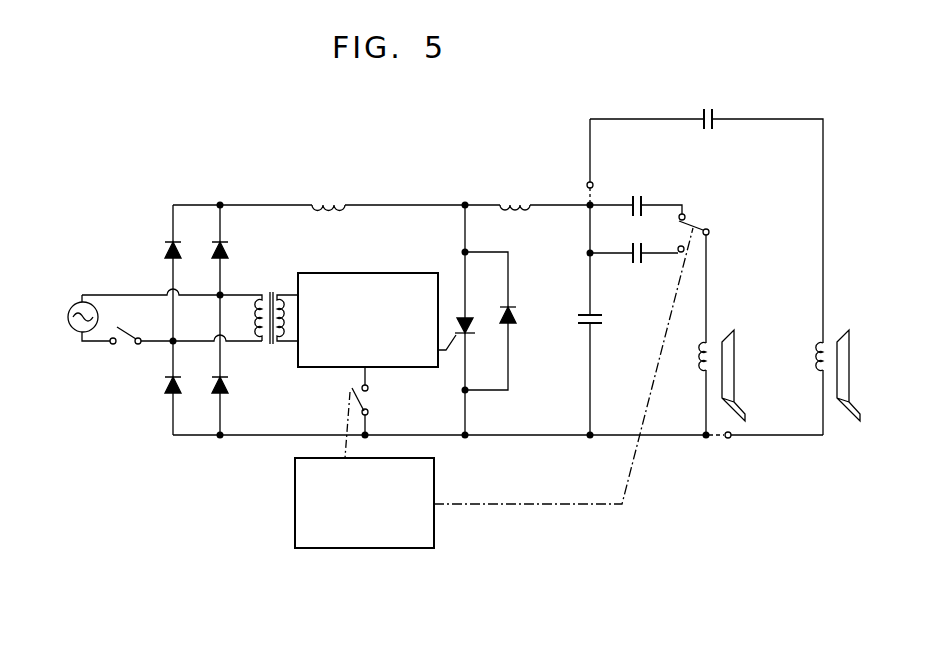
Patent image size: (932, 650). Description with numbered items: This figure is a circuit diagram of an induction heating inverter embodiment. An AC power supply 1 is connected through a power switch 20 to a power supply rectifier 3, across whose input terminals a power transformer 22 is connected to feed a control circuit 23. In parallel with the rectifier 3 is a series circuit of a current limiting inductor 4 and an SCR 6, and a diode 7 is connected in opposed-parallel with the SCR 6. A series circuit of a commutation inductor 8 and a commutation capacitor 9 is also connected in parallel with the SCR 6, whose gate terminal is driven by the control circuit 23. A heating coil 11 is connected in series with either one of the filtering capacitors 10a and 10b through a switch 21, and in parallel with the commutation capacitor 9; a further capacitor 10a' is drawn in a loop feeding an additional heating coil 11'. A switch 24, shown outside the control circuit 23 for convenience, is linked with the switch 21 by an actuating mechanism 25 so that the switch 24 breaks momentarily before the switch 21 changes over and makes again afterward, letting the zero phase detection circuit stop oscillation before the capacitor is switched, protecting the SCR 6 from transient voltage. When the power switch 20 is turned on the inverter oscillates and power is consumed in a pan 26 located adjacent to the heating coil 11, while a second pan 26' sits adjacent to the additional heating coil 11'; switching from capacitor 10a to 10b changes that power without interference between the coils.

The AC power source 1 is at (70, 312).
The power supply rectifier 3 is at (168, 240).
The power switch 20 is at (126, 344).
The power transformer 22 is at (271, 294).
The control circuit 23 is at (370, 273).
The current limiting inductor 4 is at (327, 200).
The commutation inductor 8 is at (513, 200).
The SCR 6 is at (469, 317).
The diode 7 is at (516, 306).
The switch 24 is at (372, 396).
The actuating mechanism 25 is at (294, 482).
The commutation capacitor 9 is at (573, 318).
The filtering capacitor 10a is at (654, 187).
The filtering capacitor 10b is at (632, 266).
The capacitor 10a' is at (734, 102).
The switch 21 is at (700, 220).
The heating coil 11 is at (689, 354).
The additional heating coil 11' is at (803, 354).
The pan 26 is at (753, 375).
The plate 26' is at (871, 375).